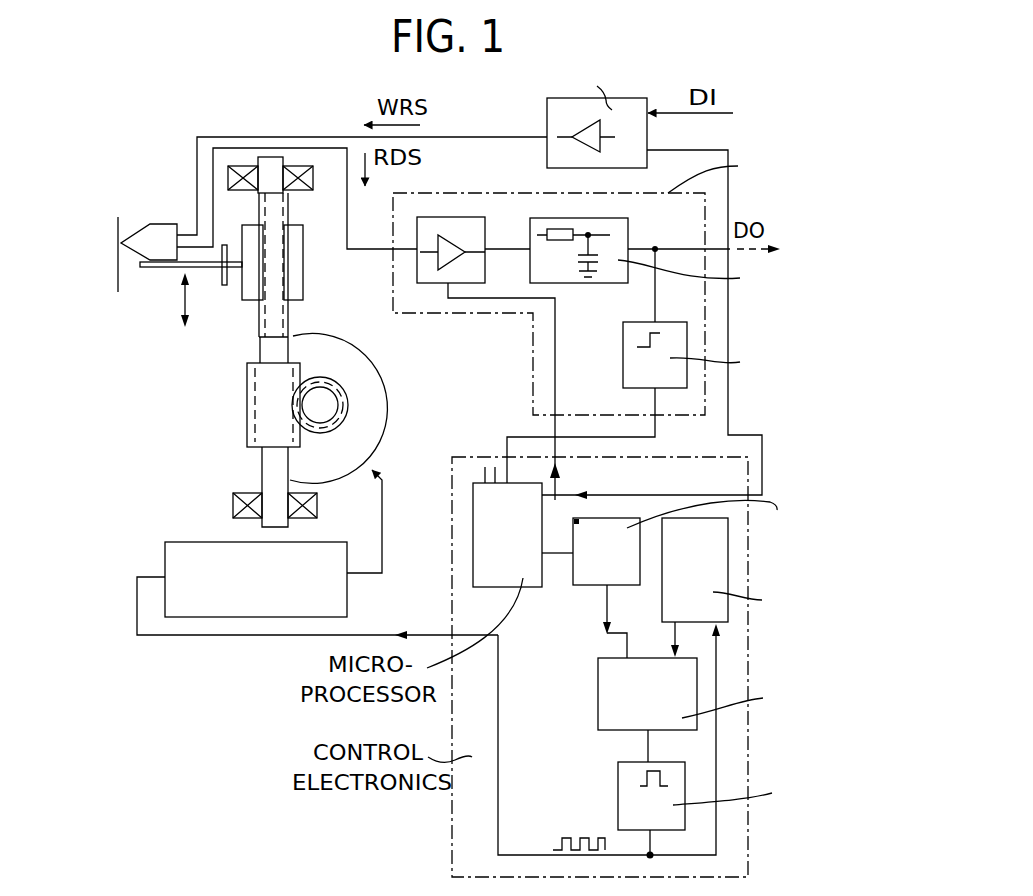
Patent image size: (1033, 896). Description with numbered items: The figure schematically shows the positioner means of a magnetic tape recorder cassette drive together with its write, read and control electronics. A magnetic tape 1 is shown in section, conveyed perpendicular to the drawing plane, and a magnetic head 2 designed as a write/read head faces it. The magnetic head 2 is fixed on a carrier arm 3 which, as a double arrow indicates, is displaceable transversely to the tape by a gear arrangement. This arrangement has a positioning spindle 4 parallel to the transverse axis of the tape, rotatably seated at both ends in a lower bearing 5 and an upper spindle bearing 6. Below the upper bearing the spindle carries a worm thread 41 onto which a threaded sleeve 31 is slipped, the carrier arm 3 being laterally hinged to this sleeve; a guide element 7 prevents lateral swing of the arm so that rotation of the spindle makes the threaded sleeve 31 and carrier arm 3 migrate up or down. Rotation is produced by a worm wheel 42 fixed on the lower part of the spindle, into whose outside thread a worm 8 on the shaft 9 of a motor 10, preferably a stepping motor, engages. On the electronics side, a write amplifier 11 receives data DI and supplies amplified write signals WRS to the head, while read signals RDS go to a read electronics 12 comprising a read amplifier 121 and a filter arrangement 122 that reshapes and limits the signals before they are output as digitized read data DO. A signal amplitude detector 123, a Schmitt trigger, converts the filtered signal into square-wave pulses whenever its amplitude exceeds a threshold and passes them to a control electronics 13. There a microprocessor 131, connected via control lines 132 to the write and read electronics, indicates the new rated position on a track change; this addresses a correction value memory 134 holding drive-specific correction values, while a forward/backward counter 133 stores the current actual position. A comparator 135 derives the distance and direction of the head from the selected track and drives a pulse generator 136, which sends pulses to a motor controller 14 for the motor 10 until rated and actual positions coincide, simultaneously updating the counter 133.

The magnetic tape 1 is at (120, 270).
The magnetic head 2 is at (167, 223).
The carrier arm 3 is at (155, 267).
The positioning spindle 4 is at (267, 468).
The bearing 5 is at (233, 501).
The upper spindle bearing 6 is at (303, 178).
The guide element 7 is at (216, 289).
The worm 8 is at (340, 388).
The shaft 9 is at (331, 405).
The motor 10 is at (397, 402).
The write amplifier 11 is at (547, 105).
The read electronics 12 is at (516, 187).
The read amplifier 121 is at (420, 216).
The filter arrangement 122 is at (628, 226).
The signal amplitude detector 123 is at (637, 325).
The control electronics 13 is at (451, 598).
The microprocessor 131 is at (512, 576).
The control lines 132 is at (561, 471).
The forward/backward counter 133 is at (673, 594).
The correction value memory 134 is at (590, 524).
The comparator 135 is at (612, 672).
The pulse generator 136 is at (616, 779).
The motor controller 14 is at (178, 556).
The threaded sleeve 31 is at (296, 275).
The worm thread 41 is at (273, 216).
The worm wheel 42 is at (253, 423).